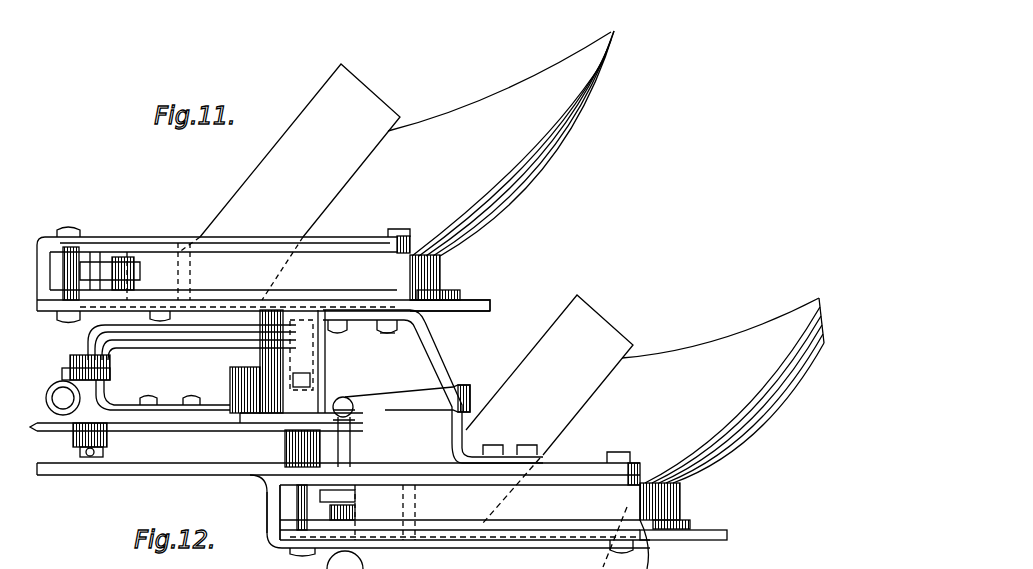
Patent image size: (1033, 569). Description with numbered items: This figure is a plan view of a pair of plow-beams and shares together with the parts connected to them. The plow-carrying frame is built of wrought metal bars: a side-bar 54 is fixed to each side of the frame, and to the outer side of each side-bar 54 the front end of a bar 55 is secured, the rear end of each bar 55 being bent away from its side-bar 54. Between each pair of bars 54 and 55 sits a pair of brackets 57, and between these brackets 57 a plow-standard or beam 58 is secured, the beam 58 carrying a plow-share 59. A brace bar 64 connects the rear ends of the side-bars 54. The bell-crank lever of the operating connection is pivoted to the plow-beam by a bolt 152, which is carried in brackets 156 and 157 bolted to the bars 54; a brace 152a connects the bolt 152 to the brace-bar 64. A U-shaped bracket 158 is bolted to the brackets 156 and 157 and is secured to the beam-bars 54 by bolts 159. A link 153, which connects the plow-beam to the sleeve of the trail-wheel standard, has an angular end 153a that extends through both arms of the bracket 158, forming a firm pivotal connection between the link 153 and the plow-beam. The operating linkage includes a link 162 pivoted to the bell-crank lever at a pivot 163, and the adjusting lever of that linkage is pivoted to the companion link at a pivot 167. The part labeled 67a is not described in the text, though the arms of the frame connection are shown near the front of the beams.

The side-bar 54 is at (247, 305).
The bar 55 is at (343, 237).
The brackets 57 is at (412, 255).
The plow-standard or beam 58 is at (441, 268).
The plow-share 59 is at (560, 152).
The brace bar 64 is at (460, 358).
The roller bracket 67a is at (85, 250).
The bolt 152 is at (318, 443).
The brace 152a is at (412, 398).
The link 153 is at (227, 350).
The angular end of link 153a is at (285, 372).
The bracket 156 is at (318, 455).
The bracket 157 is at (318, 350).
The U-shaped bracket 158 is at (388, 334).
The bolts 159 is at (283, 506).
The link 162 is at (285, 431).
The pivot 163 is at (340, 395).
The pivot 167 is at (360, 565).